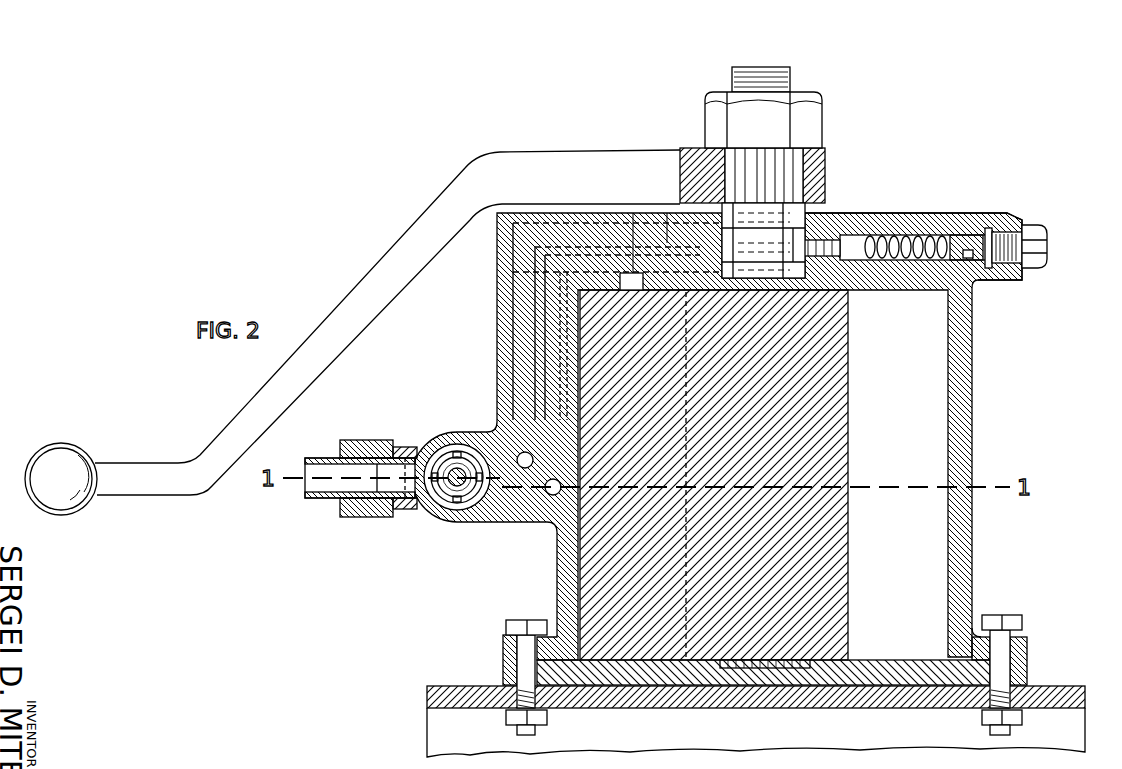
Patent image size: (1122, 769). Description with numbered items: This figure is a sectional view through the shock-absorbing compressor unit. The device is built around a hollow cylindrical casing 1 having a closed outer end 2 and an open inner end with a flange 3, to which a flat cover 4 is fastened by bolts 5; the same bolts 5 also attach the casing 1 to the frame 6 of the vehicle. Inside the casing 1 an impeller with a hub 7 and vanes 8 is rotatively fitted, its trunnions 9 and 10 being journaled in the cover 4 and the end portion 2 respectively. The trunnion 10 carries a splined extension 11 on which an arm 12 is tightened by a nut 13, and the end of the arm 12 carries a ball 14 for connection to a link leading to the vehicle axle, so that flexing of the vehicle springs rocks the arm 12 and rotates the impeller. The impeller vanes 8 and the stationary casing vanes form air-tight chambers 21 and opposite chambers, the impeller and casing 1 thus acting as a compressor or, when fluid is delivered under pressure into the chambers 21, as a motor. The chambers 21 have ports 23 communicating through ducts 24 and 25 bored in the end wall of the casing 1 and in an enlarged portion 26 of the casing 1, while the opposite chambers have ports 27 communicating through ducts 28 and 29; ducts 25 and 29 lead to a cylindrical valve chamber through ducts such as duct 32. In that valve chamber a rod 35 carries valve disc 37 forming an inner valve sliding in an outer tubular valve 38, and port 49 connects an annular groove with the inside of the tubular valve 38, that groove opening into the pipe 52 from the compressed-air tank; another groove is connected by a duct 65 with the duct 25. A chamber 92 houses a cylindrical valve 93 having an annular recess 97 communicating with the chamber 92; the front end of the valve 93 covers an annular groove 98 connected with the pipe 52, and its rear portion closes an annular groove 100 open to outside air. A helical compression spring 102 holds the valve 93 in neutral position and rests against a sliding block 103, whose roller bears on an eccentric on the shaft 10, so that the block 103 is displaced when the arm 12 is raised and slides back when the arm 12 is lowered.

The casing 1 is at (975, 449).
The closed outer end 2 is at (880, 228).
The flange 3 is at (1028, 637).
The flat cover 4 is at (1028, 666).
The bolts 5 is at (515, 619).
The frame 6 is at (1088, 693).
The hub 7 is at (849, 411).
The vanes 8 is at (558, 556).
The trunnion 9 is at (753, 688).
The trunnion 10 is at (830, 212).
The splined extension 11 is at (790, 163).
The arm 12 is at (452, 184).
The nut 13 is at (823, 104).
The ball 14 is at (78, 448).
The chambers 21 is at (920, 359).
The ports 23 is at (633, 277).
The duct 24 is at (498, 319).
The duct 25 is at (553, 495).
The enlarged portion 26 is at (498, 343).
The ports 27 is at (667, 243).
The duct 28 is at (500, 273).
The duct 29 is at (495, 481).
The duct 32 is at (492, 433).
The rod 35 is at (417, 517).
The valve disc 37 is at (462, 458).
The tubular valve 38 is at (424, 443).
The port 49 is at (447, 483).
The pipe 52 is at (325, 499).
The duct 65 is at (524, 468).
The chamber 92 is at (996, 233).
The cylindrical valve 93 is at (954, 234).
The annular recess 97 is at (970, 233).
The annular groove 98 is at (1013, 274).
The annular groove 100 is at (972, 284).
The helical compression spring 102 is at (968, 292).
The sliding block 103 is at (838, 240).